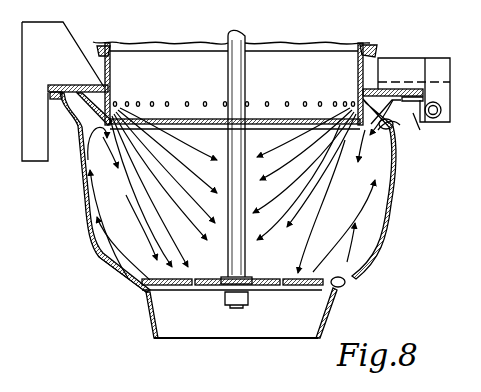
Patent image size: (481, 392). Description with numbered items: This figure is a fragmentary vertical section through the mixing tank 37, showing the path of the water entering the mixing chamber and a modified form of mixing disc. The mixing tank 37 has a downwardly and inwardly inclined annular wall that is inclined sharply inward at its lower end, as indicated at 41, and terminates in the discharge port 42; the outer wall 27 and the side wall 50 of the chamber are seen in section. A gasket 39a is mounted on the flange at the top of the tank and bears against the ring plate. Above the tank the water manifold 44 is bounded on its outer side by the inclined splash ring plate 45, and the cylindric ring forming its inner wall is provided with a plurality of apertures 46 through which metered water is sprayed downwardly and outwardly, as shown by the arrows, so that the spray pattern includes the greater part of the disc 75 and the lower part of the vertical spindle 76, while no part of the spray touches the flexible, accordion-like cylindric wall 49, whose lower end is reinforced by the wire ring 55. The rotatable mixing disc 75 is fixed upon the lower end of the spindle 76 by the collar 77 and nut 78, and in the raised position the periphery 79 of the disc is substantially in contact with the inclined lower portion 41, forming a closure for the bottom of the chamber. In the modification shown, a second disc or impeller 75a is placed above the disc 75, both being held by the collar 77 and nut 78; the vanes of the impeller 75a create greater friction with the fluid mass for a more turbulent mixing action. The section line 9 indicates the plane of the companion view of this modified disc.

The section line 9- 9 is at (100, 273).
The outer bowl wall 27 is at (393, 219).
The mixing tank 37 is at (84, 205).
The gasket 39a is at (48, 132).
The inwardly inclined lower portion 41 is at (129, 283).
The discharge port 42 is at (150, 323).
The water manifold 44 is at (410, 110).
The inclined splash ring plate 45 is at (392, 122).
The apertures 46 is at (167, 102).
The cylindric wall 49 is at (368, 46).
The basket side wall 50 is at (103, 72).
The wire ring 55 is at (100, 52).
The mixing disc 75 is at (194, 290).
The second disc or impeller 75a is at (215, 286).
The vertical spindle 76 is at (241, 78).
The collar 77 is at (251, 278).
The nut 78 is at (247, 299).
The periphery of the mixing disc 79 is at (342, 284).